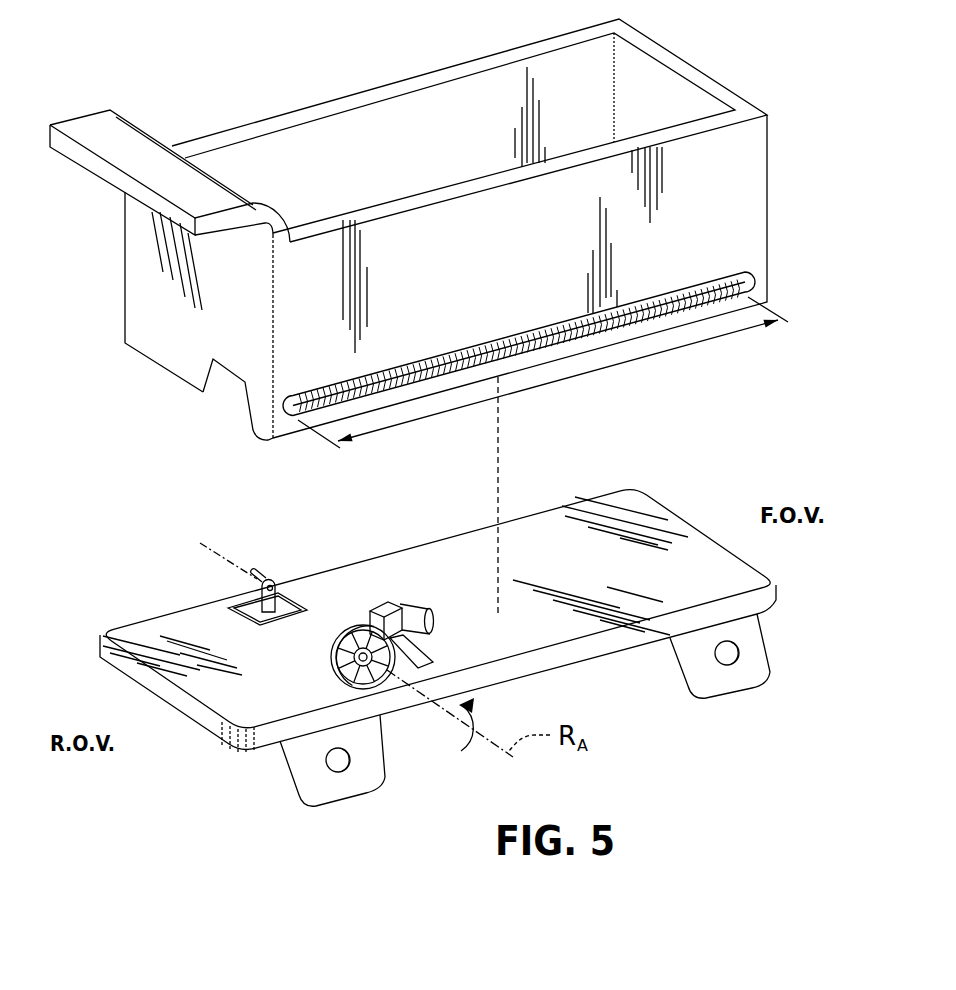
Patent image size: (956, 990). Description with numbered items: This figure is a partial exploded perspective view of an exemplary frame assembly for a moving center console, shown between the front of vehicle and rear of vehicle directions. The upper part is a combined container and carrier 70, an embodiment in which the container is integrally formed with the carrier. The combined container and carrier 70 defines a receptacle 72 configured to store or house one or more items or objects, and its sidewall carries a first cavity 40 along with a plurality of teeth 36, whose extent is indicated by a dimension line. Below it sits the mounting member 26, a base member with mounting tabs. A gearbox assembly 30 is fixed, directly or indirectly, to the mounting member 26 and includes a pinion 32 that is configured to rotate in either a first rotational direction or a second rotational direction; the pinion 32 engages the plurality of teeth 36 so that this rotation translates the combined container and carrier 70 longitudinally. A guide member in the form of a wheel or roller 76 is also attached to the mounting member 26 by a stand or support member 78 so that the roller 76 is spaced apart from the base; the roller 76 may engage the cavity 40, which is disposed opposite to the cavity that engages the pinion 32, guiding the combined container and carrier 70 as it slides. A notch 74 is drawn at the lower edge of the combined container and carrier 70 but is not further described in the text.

The combined container and carrier 70 is at (116, 296).
The receptacle 72 is at (362, 133).
The notch 74 is at (248, 398).
The first cavity 40 is at (745, 286).
The plurality of teeth 36 is at (580, 375).
The mounting member 26 is at (120, 627).
The roller 76 is at (258, 576).
The support member 78 is at (283, 590).
The gearbox assembly 30 is at (375, 692).
The pinion 32 is at (418, 648).